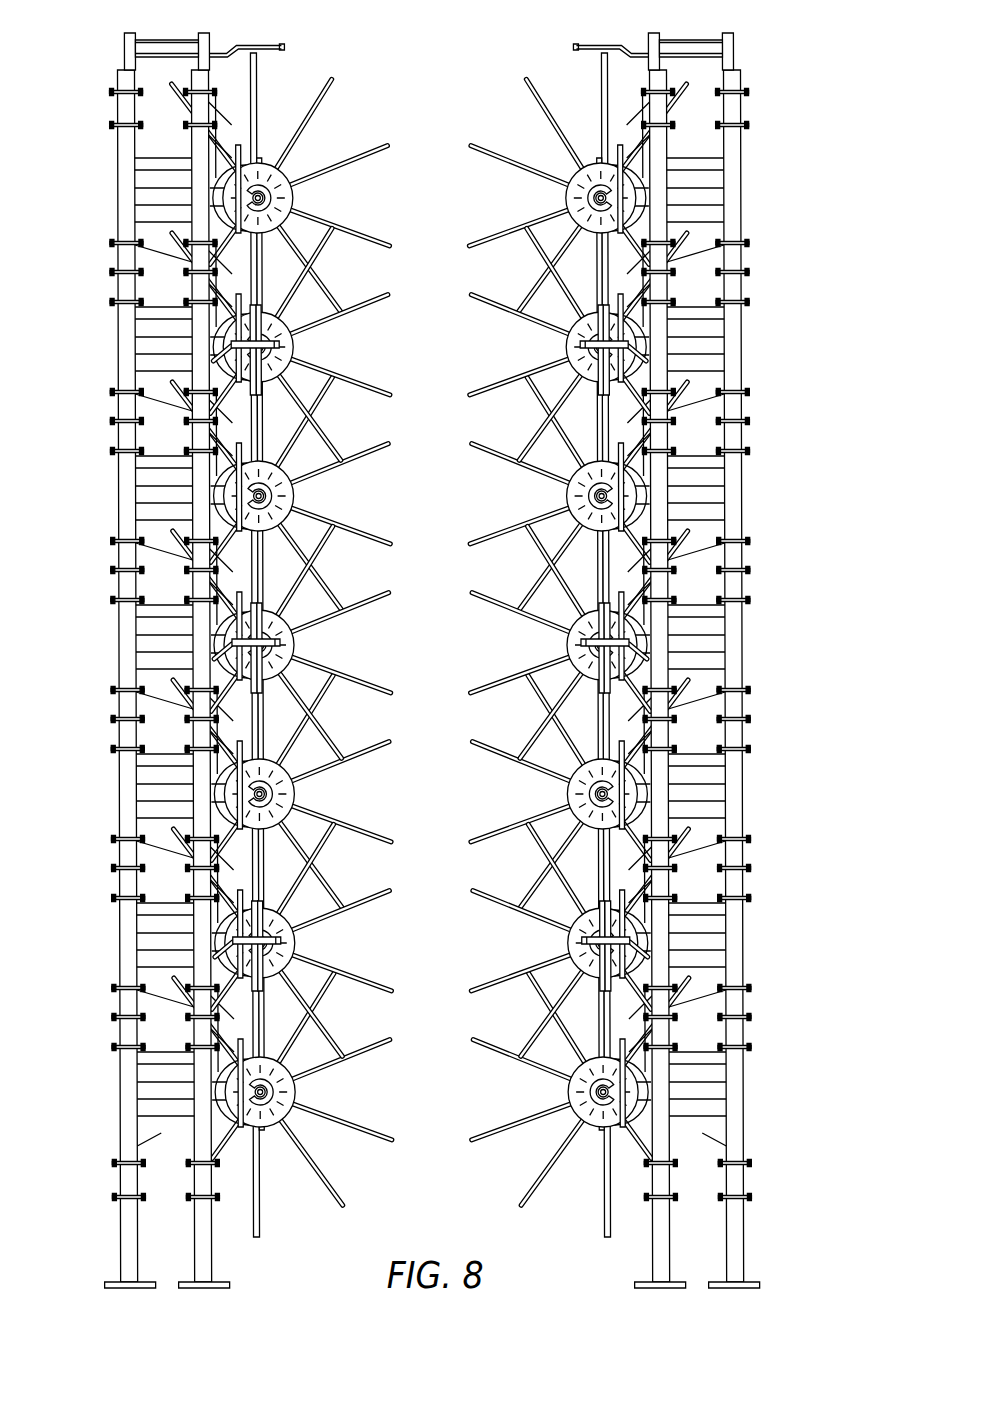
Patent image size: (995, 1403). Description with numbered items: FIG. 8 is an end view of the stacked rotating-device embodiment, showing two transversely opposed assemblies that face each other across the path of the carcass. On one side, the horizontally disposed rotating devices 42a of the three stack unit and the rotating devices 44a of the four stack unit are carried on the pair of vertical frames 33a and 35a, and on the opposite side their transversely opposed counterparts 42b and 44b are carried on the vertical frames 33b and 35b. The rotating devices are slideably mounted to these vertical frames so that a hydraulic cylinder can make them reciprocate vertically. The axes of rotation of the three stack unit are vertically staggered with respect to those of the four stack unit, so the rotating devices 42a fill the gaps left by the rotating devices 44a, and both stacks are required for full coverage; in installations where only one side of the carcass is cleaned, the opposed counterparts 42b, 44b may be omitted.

The vertical frame 33a is at (742, 176).
The vertical frame 33b is at (119, 178).
The vertical frame 35a is at (668, 353).
The vertical frame 35b is at (204, 104).
The rotating devices of the three stack unit 42a is at (518, 341).
The transversely opposed rotating devices of the three stack unit 42b is at (342, 342).
The rotating devices of the four stack unit 44a is at (541, 141).
The transversely opposed rotating devices of the four stack unit 44b is at (314, 148).